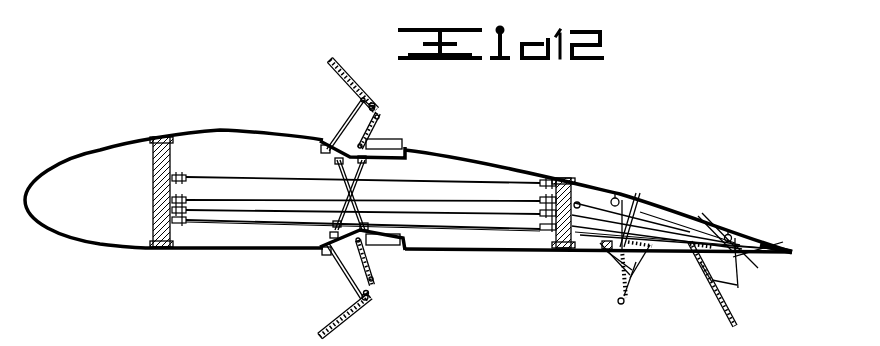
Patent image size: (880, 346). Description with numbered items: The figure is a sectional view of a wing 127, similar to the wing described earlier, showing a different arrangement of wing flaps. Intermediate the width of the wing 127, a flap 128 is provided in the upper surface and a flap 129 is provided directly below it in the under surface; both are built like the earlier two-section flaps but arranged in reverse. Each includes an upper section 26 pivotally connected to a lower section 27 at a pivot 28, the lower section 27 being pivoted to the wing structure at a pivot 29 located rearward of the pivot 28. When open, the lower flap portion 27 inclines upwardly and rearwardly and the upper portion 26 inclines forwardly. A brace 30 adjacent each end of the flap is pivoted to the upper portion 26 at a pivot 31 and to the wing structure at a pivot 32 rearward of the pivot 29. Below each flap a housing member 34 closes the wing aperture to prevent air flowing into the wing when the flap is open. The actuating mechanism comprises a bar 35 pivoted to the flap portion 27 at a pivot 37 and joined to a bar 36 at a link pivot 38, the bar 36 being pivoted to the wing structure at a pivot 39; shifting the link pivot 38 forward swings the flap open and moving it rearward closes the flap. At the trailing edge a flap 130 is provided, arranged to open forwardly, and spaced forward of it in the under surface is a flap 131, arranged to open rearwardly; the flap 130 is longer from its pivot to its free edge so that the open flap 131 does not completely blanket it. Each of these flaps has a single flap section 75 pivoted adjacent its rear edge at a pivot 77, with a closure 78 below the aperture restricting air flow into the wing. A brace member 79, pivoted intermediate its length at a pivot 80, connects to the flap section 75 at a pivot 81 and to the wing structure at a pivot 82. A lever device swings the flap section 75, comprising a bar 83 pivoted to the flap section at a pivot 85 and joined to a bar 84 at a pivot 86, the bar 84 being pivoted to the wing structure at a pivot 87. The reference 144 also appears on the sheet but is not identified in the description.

The upper section 26 is at (350, 56).
The lower section 27 is at (372, 128).
The pivot 28 is at (380, 117).
The pivot 29 is at (381, 143).
The brace 30 is at (350, 118).
The pivot 31 is at (377, 108).
The pivot 32 is at (323, 150).
The housing member 34 is at (405, 160).
The bar 35 is at (360, 102).
The bar 36 is at (345, 186).
The pivot 37 is at (370, 101).
The link pivot 38 is at (338, 164).
The pivot 39 is at (366, 163).
The flap section 75 is at (628, 292).
The pivot 77 is at (690, 243).
The closure 78 is at (662, 228).
The brace member 79 is at (615, 256).
The pivot 80 is at (620, 262).
The pivot 81 is at (630, 285).
The pivot 82 is at (602, 244).
The bar 83 is at (645, 252).
The bar 84 is at (645, 203).
The pivot 85 is at (636, 268).
The pivot 86 is at (624, 235).
The pivot 87 is at (636, 199).
The wing 127 is at (177, 127).
The flap 128 is at (376, 98).
The flap 129 is at (370, 302).
The flap 130 is at (738, 326).
The flap 131 is at (622, 302).
The wing section 144 is at (103, 331).